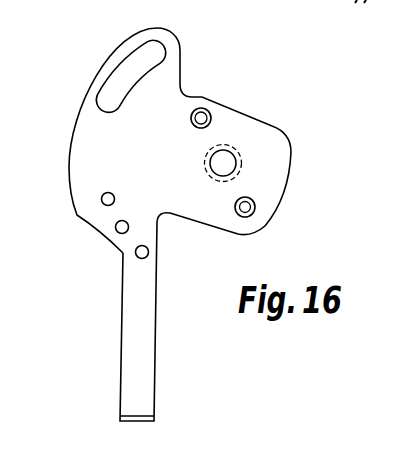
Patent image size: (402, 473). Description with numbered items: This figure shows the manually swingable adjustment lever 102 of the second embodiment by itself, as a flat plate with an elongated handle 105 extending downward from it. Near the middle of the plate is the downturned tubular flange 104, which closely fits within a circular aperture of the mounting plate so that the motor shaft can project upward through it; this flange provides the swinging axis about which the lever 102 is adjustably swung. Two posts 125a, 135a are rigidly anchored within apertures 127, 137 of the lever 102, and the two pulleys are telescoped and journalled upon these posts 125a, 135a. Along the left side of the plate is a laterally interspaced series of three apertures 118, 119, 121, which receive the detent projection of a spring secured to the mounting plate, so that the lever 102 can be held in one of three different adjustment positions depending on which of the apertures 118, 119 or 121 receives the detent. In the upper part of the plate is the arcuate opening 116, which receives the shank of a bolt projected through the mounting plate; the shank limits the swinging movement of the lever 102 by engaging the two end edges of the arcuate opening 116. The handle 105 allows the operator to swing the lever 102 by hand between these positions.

The adjustment lever 102 is at (100, 127).
The downturned tubular flange 104 is at (209, 163).
The handle 105 is at (127, 343).
The arcuate opening 116 is at (147, 53).
The aperture 118 is at (101, 199).
The aperture 119 is at (115, 229).
The aperture 121 is at (135, 255).
The post 125a is at (203, 113).
The aperture 127 is at (256, 206).
The post 135a is at (249, 203).
The aperture 137 is at (209, 111).